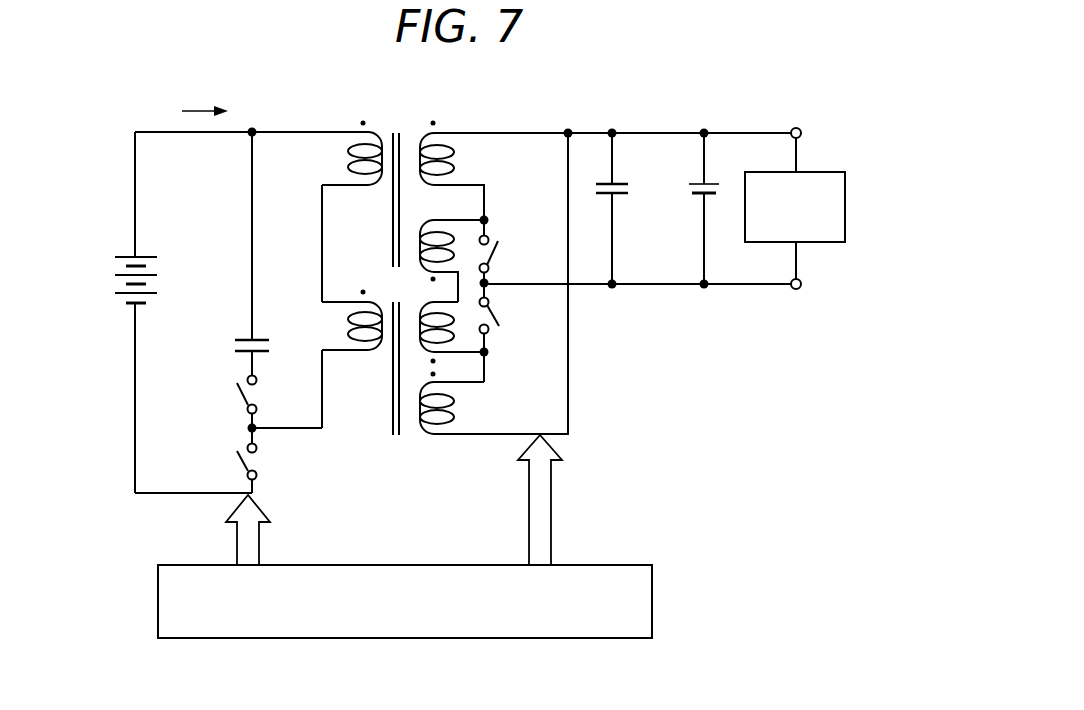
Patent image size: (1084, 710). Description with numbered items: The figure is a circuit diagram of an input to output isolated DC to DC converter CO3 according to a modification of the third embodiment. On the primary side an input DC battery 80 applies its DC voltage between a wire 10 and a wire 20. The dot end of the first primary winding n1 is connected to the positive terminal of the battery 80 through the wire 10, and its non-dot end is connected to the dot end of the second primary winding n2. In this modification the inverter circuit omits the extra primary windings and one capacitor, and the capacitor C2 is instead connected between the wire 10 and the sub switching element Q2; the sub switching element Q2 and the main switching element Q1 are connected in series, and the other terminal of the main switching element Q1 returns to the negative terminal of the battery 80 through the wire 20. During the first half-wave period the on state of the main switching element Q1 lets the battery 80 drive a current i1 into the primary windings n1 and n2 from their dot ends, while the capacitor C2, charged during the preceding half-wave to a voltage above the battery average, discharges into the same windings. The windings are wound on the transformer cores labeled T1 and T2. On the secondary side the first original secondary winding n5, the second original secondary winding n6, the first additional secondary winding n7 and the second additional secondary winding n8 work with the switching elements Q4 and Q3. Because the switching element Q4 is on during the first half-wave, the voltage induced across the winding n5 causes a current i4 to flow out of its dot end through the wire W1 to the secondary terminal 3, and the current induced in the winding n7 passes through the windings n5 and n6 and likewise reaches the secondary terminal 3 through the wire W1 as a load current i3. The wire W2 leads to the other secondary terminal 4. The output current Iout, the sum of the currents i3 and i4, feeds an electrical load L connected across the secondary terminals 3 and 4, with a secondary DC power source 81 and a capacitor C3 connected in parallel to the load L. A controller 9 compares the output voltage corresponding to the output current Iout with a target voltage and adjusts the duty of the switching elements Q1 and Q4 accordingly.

The wire 10 is at (290, 131).
The input DC battery 80 is at (109, 262).
The wire 20 is at (165, 492).
The secondary terminal 3 is at (627, 131).
The secondary terminal 4 is at (667, 286).
The secondary DC power source 81 is at (686, 200).
The controller 9 is at (433, 536).
The DC to DC converter CO3 is at (714, 630).
The electrical load L is at (828, 171).
The capacitor C2 is at (234, 254).
The smoothing capacitor C3 is at (630, 208).
The main switching element Q1 is at (230, 469).
The sub switching element Q2 is at (230, 410).
The switching element Q3 is at (509, 325).
The switching element Q4 is at (509, 259).
The transformer T1 is at (398, 184).
The transformer T2 is at (398, 383).
The first primary winding n1 is at (351, 153).
The second primary winding n2 is at (351, 320).
The first original secondary winding n5 is at (494, 171).
The second original secondary winding n6 is at (494, 283).
The first additional secondary winding n7 is at (454, 259).
The second additional secondary winding n8 is at (454, 342).
The wire W1 is at (588, 131).
The output wire W2 is at (590, 286).
The current i1 is at (205, 99).
The load current i3 is at (528, 500).
The current i4 is at (505, 116).
The output current Iout is at (670, 118).